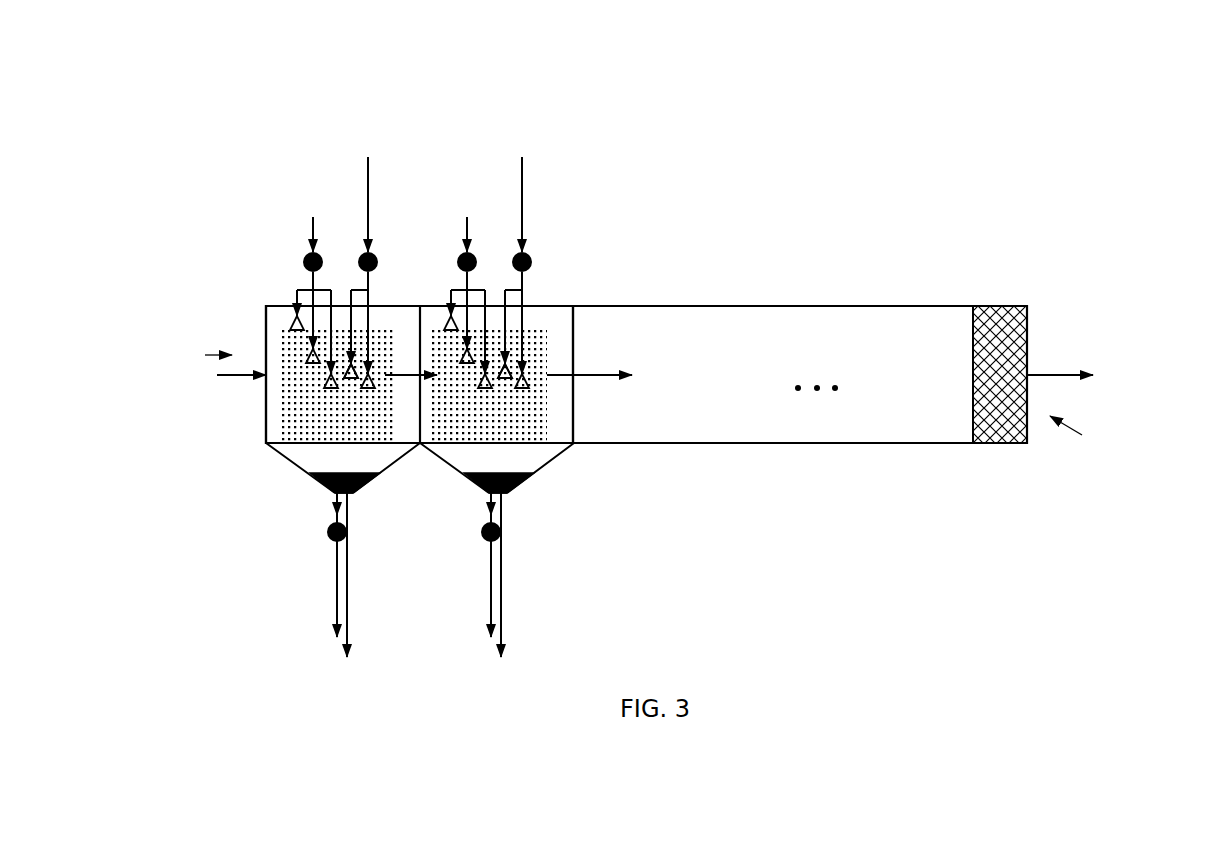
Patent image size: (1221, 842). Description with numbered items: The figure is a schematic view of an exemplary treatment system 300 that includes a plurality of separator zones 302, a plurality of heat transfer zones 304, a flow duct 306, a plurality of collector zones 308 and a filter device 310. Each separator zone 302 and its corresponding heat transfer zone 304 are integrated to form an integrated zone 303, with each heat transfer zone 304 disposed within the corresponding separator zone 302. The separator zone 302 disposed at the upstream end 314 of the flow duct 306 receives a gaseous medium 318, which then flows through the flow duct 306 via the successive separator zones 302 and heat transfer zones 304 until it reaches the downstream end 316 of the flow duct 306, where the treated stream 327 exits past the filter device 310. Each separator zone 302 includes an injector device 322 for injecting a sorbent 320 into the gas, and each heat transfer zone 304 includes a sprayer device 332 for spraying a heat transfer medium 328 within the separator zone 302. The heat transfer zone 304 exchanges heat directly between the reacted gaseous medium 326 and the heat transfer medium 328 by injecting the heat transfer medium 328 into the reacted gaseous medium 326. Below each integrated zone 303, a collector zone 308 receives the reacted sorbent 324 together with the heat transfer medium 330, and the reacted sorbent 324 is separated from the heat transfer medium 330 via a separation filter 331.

The treatment system 300 is at (1070, 100).
The separator zone 302 is at (288, 311).
The integrated zone 303 is at (266, 428).
The heat transfer zone 304 is at (345, 393).
The flow duct 306 is at (908, 305).
The collector zone 308 is at (302, 468).
The filter device 310 is at (996, 444).
The upstream end 314 is at (194, 356).
The downstream end 316 is at (1090, 435).
The gaseous medium 318 is at (243, 376).
The sorbent 320 is at (311, 222).
The injector device 322 is at (326, 371).
The reacted sorbent 324 is at (331, 507).
The reacted gaseous medium 326 is at (630, 378).
The product stream 327 is at (1066, 372).
The heat transfer medium 328 is at (366, 165).
The heat transfer medium 330 is at (349, 657).
The separation filter 331 is at (360, 494).
The sprayer device 332 is at (356, 362).